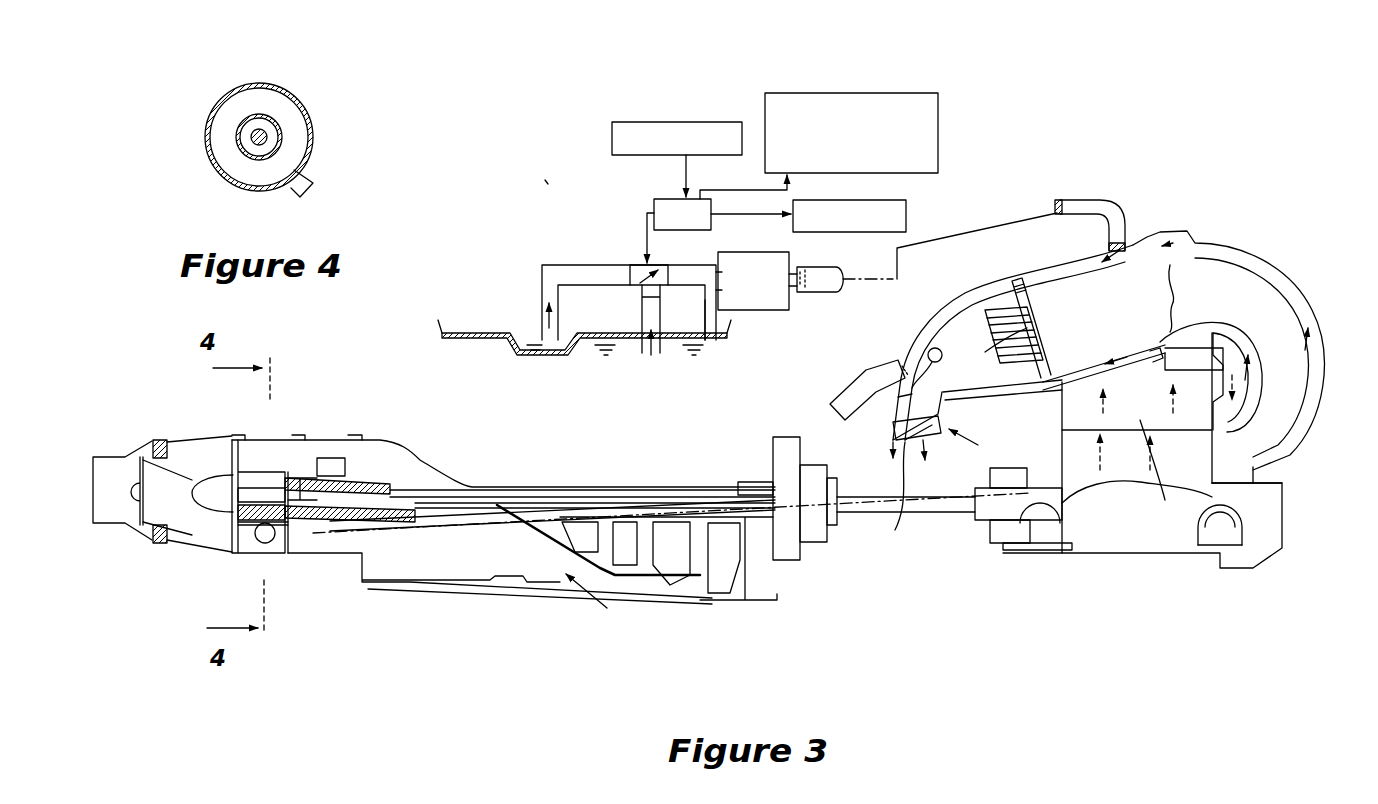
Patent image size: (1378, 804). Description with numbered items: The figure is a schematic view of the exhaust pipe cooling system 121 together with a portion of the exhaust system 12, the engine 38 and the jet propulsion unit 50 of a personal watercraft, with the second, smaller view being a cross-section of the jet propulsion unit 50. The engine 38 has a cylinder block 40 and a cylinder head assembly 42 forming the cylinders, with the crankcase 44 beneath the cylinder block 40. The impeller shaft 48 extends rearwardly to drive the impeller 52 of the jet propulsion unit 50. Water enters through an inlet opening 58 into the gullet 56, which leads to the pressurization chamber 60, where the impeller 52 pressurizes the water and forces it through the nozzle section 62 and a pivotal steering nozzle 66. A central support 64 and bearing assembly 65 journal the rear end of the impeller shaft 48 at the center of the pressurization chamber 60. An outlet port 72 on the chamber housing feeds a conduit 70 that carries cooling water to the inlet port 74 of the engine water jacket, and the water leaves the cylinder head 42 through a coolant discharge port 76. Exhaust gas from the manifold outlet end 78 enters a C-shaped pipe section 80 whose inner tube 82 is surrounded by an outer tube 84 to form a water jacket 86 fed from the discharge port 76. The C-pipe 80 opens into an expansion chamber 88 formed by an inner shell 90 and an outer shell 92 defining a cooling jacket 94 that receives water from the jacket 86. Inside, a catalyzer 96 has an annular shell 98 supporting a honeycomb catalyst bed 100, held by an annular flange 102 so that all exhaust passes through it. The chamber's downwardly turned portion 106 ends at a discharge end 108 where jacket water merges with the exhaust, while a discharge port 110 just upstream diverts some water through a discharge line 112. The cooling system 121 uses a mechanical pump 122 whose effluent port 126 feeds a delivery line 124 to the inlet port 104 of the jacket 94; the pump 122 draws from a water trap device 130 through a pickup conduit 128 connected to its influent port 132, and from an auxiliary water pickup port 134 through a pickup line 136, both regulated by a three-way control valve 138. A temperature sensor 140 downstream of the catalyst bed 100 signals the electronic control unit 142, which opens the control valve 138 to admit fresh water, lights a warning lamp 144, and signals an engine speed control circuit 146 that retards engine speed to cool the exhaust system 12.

In FIG. 3, the exhaust system 12 is at (1176, 229).
In FIG. 3, the internal combustion engine 38 is at (1147, 604).
In FIG. 3, the cylinder block 40 is at (1140, 520).
In FIG. 3, the cylinder head assembly 42 is at (1162, 476).
In FIG. 3, the crankcase 44 is at (1123, 533).
In FIG. 4, the impeller shaft 48 is at (248, 143).
In FIG. 3, the impeller shaft 48 is at (572, 497).
In FIG. 3, the jet propulsion unit 50 is at (424, 436).
In FIG. 3, the impeller 52 is at (327, 458).
In FIG. 3, the gullet 56 is at (397, 618).
In FIG. 3, the inlet opening 58 is at (548, 585).
In FIG. 4, the pressurization chamber 60 is at (285, 108).
In FIG. 3, the pressurization chamber 60 is at (257, 547).
In FIG. 3, the nozzle section 62 is at (150, 508).
In FIG. 4, the central support 64 is at (238, 122).
In FIG. 3, the central support 64 is at (230, 512).
In FIG. 3, the bearing assembly 65 is at (207, 487).
In FIG. 3, the steering nozzle 66 is at (105, 527).
In FIG. 3, the conduit 70 is at (480, 532).
In FIG. 4, the outlet port 72 is at (306, 189).
In FIG. 3, the outlet port 72 is at (270, 547).
In FIG. 3, the inlet port 74 is at (1057, 522).
In FIG. 3, the coolant discharge port 76 is at (1232, 357).
In FIG. 3, the outlet end of the exhaust manifold 78 is at (1280, 487).
In FIG. 3, the C-shaped pipe section 80 is at (1331, 296).
In FIG. 3, the inner tube 82 is at (1275, 467).
In FIG. 3, the outer tube 84 is at (1330, 410).
In FIG. 3, the water jacket 86 is at (1278, 278).
In FIG. 3, the expansion chamber 88 is at (975, 267).
In FIG. 3, the inner shell 90 is at (1197, 253).
In FIG. 3, the outer shell 92 is at (1060, 272).
In FIG. 3, the cooling jacket 94 is at (967, 297).
In FIG. 3, the catalyzer 96 is at (1107, 314).
In FIG. 3, the annular shell 98 is at (1043, 288).
In FIG. 3, the catalyst bed 100 is at (1027, 328).
In FIG. 3, the annular flange 102 is at (1070, 352).
In FIG. 3, the inlet port 104 is at (1112, 212).
In FIG. 3, the downwardly turned portion 106 is at (991, 445).
In FIG. 3, the discharge end 108 is at (902, 505).
In FIG. 3, the discharge port 110 is at (888, 365).
In FIG. 3, the discharge line 112 is at (832, 408).
In FIG. 3, the exhaust pipe cooling system 121 is at (546, 179).
In FIG. 3, the mechanical pump 122 is at (755, 311).
In FIG. 3, the delivery line 124 is at (895, 251).
In FIG. 3, the effluent port 126 is at (792, 300).
In FIG. 3, the pickup conduit 128 is at (558, 265).
In FIG. 3, the water trap device 130 is at (514, 319).
In FIG. 3, the influent port 132 is at (710, 327).
In FIG. 3, the auxiliary water pickup port 134 is at (660, 353).
In FIG. 3, the pickup line 136 is at (642, 313).
In FIG. 3, the control valve 138 is at (642, 262).
In FIG. 3, the temperature sensor 140 is at (664, 120).
In FIG. 3, the electronic control unit 142 is at (668, 198).
In FIG. 3, the warning lamp 144 is at (900, 200).
In FIG. 3, the engine speed control circuit 146 is at (880, 92).